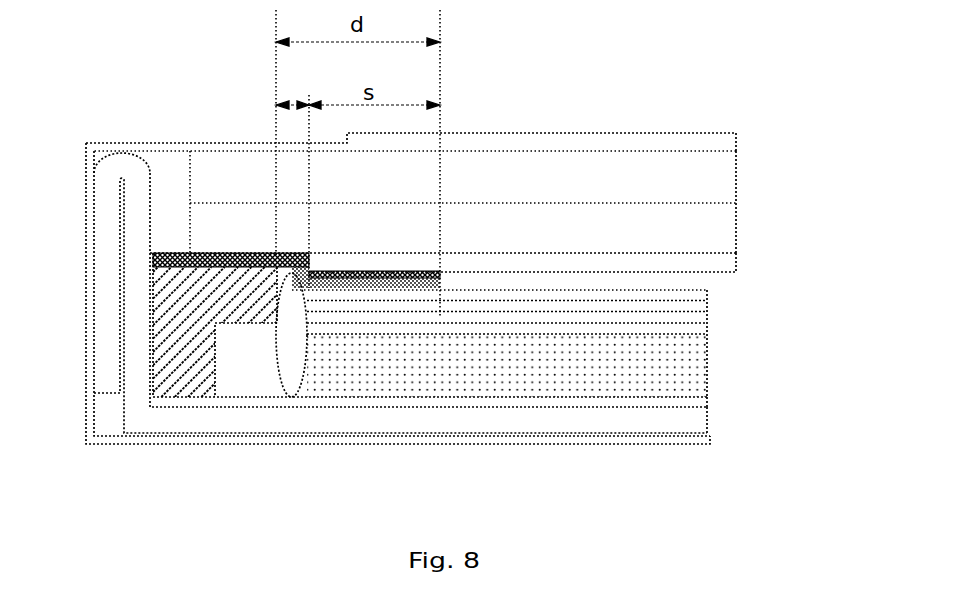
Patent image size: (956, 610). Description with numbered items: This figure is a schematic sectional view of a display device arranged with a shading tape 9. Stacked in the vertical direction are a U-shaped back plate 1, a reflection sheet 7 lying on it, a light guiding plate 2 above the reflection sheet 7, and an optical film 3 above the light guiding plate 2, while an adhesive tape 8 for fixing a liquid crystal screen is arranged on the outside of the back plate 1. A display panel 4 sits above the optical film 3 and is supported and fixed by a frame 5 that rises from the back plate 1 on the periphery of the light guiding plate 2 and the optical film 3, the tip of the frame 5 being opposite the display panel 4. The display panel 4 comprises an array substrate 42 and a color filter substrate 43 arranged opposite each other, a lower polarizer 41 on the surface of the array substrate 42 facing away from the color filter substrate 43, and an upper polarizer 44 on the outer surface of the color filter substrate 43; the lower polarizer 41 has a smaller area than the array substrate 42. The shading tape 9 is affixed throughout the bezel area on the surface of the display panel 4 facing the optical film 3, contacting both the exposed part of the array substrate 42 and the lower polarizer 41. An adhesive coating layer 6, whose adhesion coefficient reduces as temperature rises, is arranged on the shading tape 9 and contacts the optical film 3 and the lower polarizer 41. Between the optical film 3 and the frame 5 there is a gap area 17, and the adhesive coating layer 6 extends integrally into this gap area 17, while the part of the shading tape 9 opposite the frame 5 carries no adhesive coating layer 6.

The back plate 1 is at (702, 423).
The light guiding plate 2 is at (702, 372).
The optical film 3 is at (707, 297).
The display panel 4 is at (481, 191).
The lower polarizer 41 is at (557, 254).
The array substrate 42 is at (727, 242).
The color filter substrate 43 is at (725, 182).
The upper polarizer 44 is at (717, 143).
The frame 5 is at (153, 382).
The adhesive coating layer 6 is at (440, 284).
The reflection sheet 7 is at (702, 405).
The adhesive tape 8 is at (702, 445).
The shading tape 9 is at (153, 265).
The gap area 17 is at (282, 383).